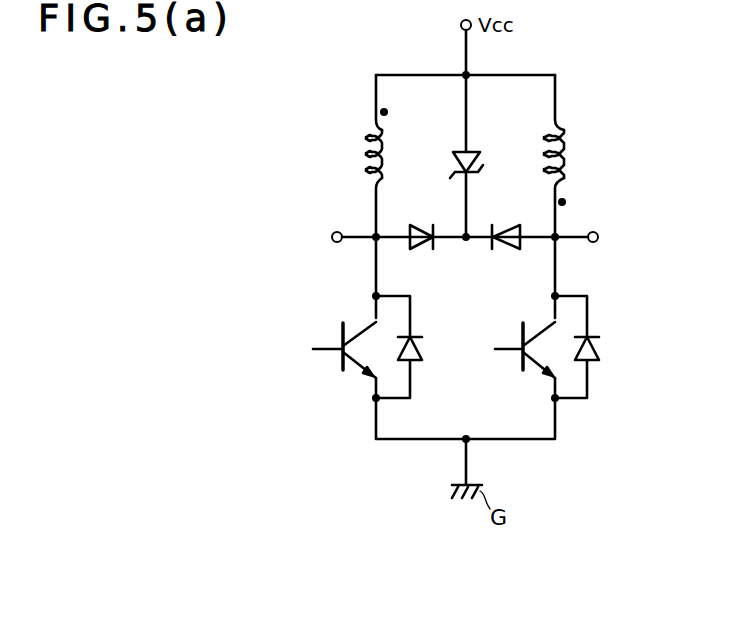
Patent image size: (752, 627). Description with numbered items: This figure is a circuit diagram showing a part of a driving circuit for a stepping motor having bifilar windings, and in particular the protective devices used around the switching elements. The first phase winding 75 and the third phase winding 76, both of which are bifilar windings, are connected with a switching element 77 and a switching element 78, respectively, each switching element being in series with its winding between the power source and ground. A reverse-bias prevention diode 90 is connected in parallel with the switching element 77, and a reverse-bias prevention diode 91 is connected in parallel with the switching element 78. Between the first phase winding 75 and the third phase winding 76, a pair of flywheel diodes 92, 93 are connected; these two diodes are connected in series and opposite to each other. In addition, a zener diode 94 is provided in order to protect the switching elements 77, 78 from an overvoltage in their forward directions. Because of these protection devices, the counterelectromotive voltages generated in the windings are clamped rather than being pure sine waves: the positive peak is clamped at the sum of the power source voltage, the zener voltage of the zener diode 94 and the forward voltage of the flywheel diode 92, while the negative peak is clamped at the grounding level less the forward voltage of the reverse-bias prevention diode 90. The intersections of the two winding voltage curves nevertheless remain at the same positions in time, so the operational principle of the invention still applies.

The first phase winding 75 is at (371, 159).
The third phase winding 76 is at (562, 145).
The switching element 77 is at (345, 362).
The switching element 78 is at (520, 362).
The reverse-bias prevention diode 90 is at (421, 340).
The reverse-bias prevention diode 91 is at (600, 344).
The flywheel diode 92 is at (423, 226).
The flywheel diode 93 is at (514, 226).
The zener diode 94 is at (477, 161).